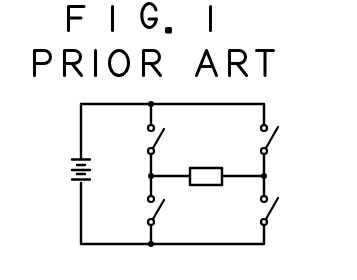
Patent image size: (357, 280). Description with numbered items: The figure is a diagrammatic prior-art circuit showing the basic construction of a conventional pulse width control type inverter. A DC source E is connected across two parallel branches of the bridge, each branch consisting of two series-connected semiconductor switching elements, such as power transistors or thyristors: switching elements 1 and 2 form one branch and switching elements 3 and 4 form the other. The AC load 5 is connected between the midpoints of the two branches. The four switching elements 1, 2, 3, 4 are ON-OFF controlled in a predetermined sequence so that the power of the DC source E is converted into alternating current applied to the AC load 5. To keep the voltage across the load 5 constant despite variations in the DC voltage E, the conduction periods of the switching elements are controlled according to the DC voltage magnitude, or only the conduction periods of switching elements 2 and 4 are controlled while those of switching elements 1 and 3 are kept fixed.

The DC source E is at (67, 172).
The semiconductor switching element 1 is at (146, 145).
The semiconductor switching element 2 is at (147, 212).
The semiconductor switching element 3 is at (280, 136).
The semiconductor switching element 4 is at (280, 213).
The AC load 5 is at (210, 167).